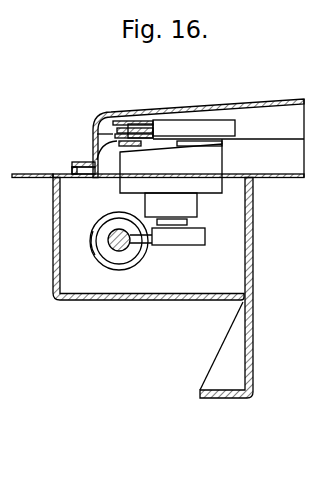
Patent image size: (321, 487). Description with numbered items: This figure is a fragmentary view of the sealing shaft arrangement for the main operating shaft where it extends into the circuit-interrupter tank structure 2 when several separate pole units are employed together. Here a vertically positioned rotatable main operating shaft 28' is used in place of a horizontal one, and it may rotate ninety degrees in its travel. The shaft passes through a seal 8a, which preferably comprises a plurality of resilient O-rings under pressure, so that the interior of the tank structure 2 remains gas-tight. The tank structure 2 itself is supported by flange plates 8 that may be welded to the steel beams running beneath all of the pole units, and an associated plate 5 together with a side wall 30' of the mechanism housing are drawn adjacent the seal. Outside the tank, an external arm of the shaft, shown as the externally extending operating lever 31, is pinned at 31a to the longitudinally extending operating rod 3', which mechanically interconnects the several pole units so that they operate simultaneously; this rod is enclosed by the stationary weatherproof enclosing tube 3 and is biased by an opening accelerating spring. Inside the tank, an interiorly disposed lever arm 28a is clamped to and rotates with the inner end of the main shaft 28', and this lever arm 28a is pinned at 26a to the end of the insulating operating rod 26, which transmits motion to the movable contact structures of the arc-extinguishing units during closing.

The tank structure 2 is at (36, 178).
The mounting plate 5 is at (278, 178).
The flange plate 8 is at (254, 324).
The seal 8a is at (222, 153).
The insulating operating rod 26 is at (263, 126).
The pin connection 26a is at (127, 113).
The lever arm 28a is at (97, 132).
The main operating shaft 28' is at (180, 227).
The weatherproof enclosing tube 3 is at (111, 250).
The operating rod 3' is at (110, 221).
The operating lever 31 is at (137, 245).
The pin connection 31a is at (93, 231).
The side wall 30' is at (131, 239).